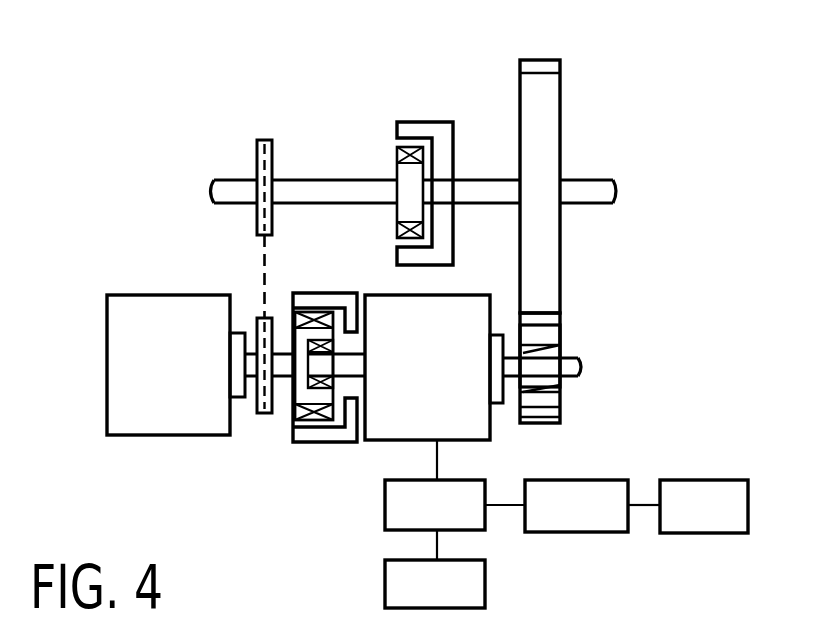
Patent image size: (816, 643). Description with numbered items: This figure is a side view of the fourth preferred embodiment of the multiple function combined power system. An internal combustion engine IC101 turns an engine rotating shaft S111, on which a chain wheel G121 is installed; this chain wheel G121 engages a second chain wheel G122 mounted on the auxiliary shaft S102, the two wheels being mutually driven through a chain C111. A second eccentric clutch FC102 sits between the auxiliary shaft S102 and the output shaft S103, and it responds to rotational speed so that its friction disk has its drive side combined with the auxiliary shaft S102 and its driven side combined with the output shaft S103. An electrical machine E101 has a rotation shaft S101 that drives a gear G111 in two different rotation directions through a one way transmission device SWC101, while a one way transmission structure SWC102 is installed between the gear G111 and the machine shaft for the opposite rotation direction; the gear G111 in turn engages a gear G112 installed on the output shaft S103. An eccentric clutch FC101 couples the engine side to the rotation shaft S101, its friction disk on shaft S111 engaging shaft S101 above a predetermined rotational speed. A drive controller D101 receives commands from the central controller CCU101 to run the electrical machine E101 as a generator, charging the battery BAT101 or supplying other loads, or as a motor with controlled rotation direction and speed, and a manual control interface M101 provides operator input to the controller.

The internal combustion engine IC101 is at (125, 330).
The engine rotating shaft S111 is at (253, 380).
The chain wheel G121 is at (273, 414).
The chain wheel G122 is at (272, 157).
The chain C111 is at (263, 277).
The auxiliary shaft S102 is at (228, 184).
The eccentric clutch FC102 is at (417, 122).
The gear G112 is at (540, 63).
The output shaft S103 is at (583, 187).
The one way transmission structure SWC102 is at (547, 356).
The gear G111 is at (547, 425).
The electrical machine E101 is at (457, 423).
The eccentric clutch FC101 is at (328, 445).
The one way transmission device SWC101 is at (318, 348).
The rotation shaft S101 is at (357, 367).
The drive controller D101 is at (455, 520).
The battery BAT101 is at (435, 584).
The central controller CCU101 is at (592, 506).
The manual control interface M101 is at (704, 506).